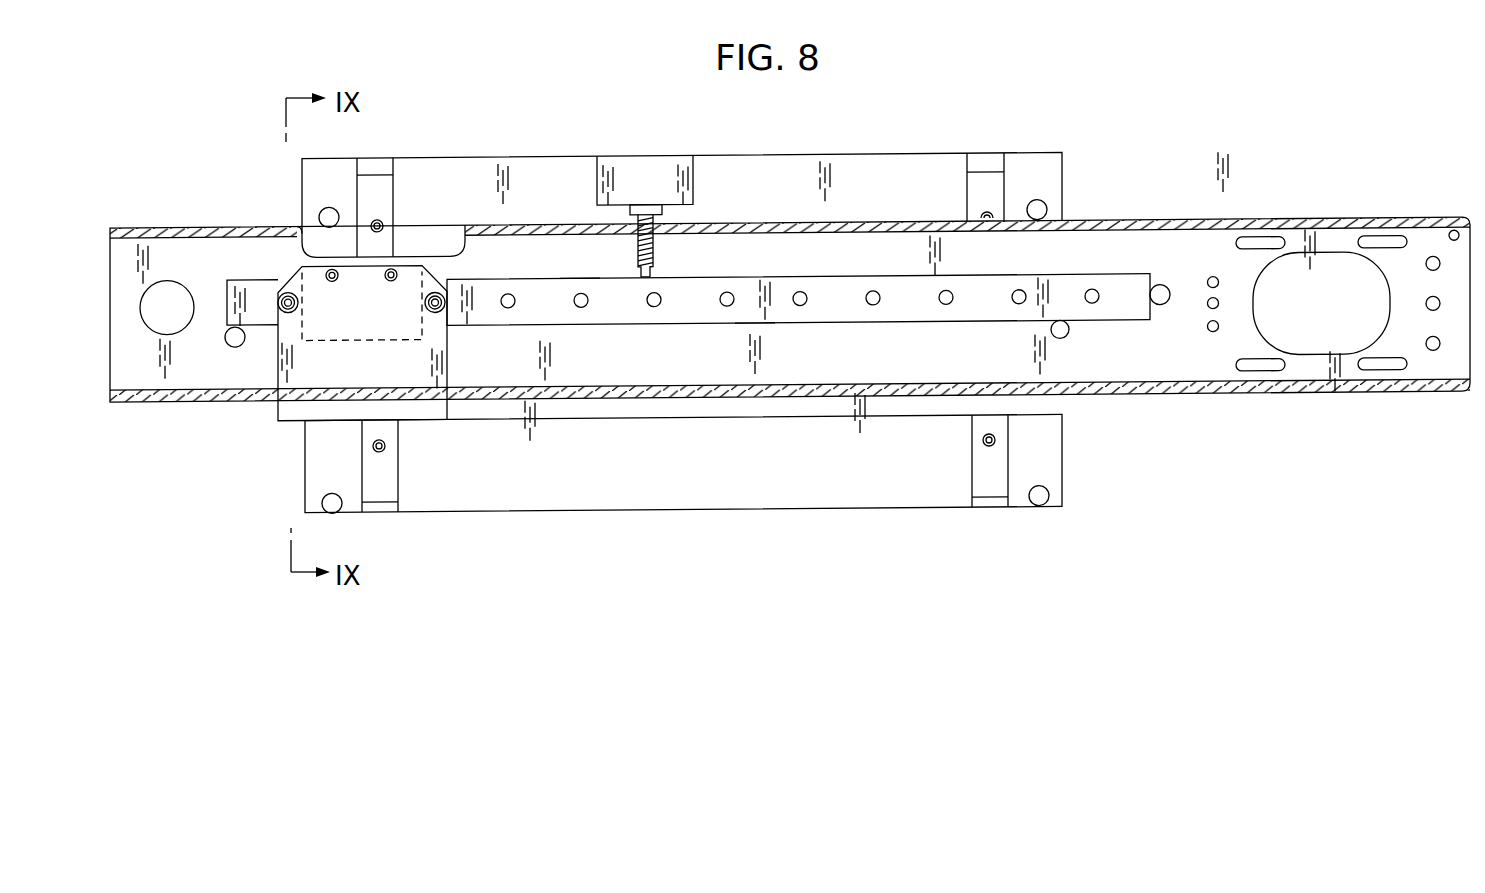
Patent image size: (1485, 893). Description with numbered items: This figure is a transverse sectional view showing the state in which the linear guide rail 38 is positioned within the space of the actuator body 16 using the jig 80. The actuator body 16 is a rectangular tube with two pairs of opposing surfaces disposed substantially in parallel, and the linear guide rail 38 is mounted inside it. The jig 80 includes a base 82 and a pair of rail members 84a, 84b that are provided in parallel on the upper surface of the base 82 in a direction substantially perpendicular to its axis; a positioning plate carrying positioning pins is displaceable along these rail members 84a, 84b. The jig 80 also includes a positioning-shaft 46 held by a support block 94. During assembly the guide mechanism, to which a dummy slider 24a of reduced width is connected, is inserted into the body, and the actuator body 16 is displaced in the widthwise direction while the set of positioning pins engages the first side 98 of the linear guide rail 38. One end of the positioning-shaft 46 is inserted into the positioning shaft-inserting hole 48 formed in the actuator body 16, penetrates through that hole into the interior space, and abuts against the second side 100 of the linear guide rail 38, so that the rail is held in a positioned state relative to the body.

The actuator body 16 is at (1150, 223).
The dummy slider 24a is at (347, 393).
The linear guide rail 38 is at (855, 300).
The positioning-shaft 46 is at (653, 253).
The positioning shaft-inserting hole 48 is at (644, 210).
The jig 80 is at (616, 524).
The base 82 is at (707, 466).
The rail member 84a is at (378, 480).
The rail member 84b is at (989, 480).
The support block 94 is at (642, 182).
The first side 98 is at (755, 329).
The second side 100 is at (575, 283).